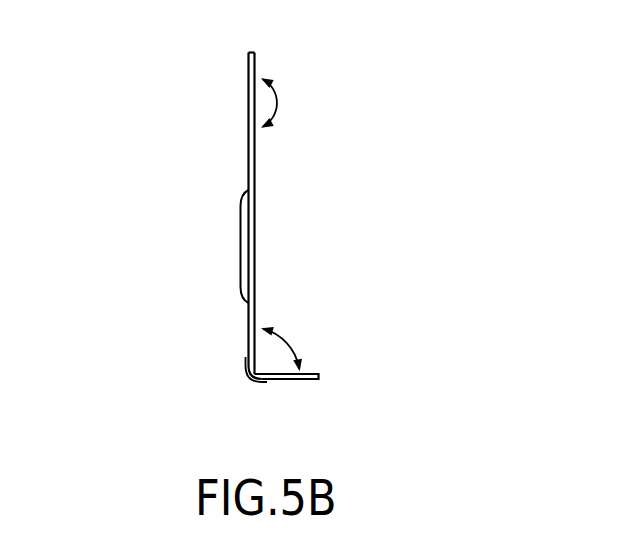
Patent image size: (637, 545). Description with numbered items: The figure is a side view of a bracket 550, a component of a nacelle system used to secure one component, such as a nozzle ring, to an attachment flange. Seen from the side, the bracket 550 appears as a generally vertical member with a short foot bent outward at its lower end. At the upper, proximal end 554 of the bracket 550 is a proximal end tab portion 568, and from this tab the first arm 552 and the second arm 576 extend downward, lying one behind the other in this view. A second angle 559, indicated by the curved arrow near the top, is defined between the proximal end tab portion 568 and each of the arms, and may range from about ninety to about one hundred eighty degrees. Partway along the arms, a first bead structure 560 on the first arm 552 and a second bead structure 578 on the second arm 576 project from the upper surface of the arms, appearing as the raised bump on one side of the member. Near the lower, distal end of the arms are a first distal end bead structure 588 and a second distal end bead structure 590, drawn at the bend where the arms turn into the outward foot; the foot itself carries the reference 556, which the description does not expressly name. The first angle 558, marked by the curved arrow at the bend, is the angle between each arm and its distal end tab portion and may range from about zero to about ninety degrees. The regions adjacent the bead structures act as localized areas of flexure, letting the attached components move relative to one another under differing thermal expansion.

The bracket 550 is at (138, 66).
The first arm 552 is at (255, 163).
The proximal end 554 is at (247, 96).
The foot flange 556 is at (315, 373).
The first angle 558 is at (296, 340).
The second angle 559 is at (277, 103).
The first bead structure 560 is at (240, 220).
The proximal end tab portion 568 is at (247, 75).
The second arm 576 is at (255, 190).
The second bead structure 578 is at (240, 238).
The first distal end bead structure 588 is at (245, 367).
The second distal end bead structure 590 is at (243, 375).